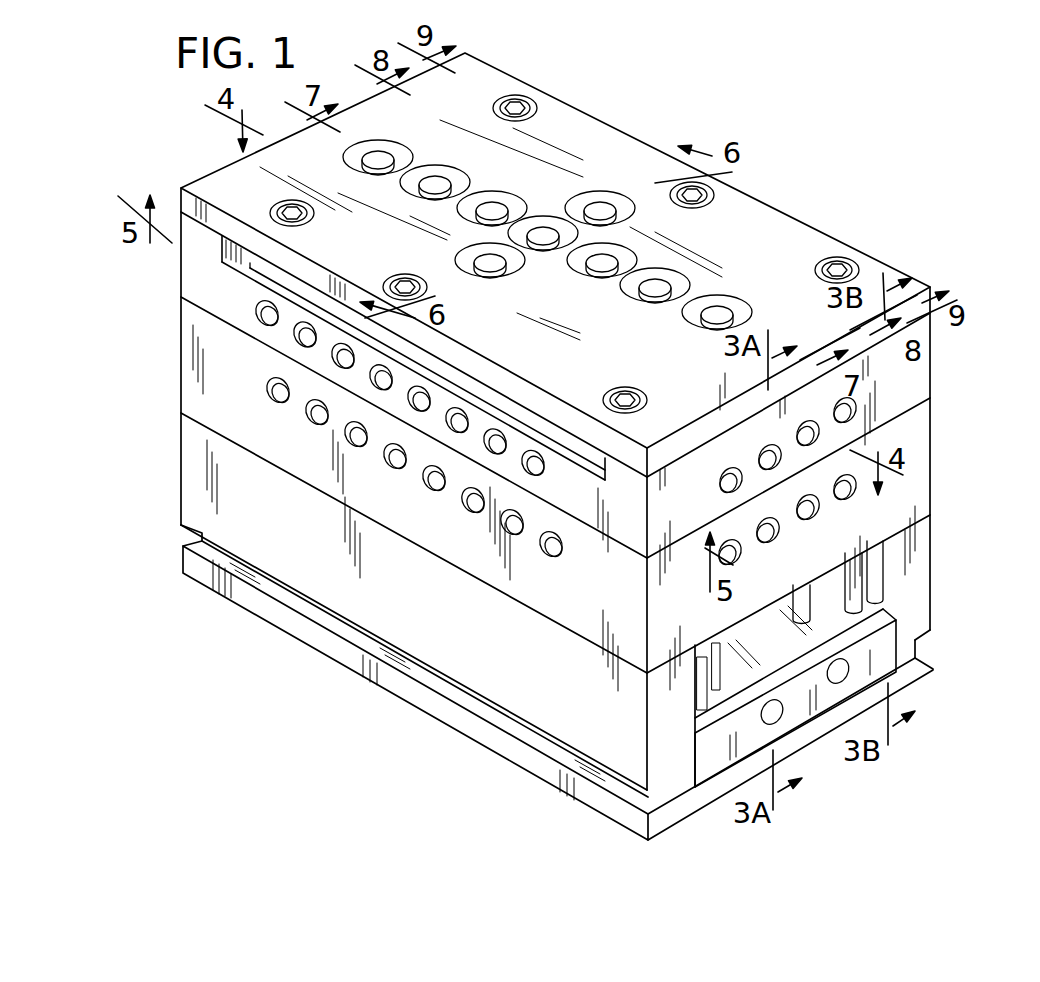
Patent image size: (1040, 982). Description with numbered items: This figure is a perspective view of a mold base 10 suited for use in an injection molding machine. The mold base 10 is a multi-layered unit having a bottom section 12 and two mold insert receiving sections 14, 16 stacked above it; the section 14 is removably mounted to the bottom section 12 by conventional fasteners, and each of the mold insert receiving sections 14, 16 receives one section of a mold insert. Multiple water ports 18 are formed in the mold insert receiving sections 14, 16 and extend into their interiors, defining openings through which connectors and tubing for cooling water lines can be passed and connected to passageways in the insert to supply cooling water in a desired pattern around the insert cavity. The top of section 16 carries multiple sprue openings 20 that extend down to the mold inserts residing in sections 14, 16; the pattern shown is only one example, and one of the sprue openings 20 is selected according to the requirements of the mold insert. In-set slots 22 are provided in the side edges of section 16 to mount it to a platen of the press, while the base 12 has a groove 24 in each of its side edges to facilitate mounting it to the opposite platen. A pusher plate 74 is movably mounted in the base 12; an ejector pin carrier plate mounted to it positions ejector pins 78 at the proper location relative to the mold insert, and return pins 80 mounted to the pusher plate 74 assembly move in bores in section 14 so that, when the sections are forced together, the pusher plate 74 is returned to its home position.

The mold base 10 is at (848, 199).
The bottom section 12 is at (932, 560).
The mold insert receiving section 14 is at (932, 440).
The mold insert receiving section 16 is at (932, 358).
The water ports 18 is at (305, 342).
The sprue openings 20 is at (655, 290).
The in-set slots 22 is at (248, 263).
The groove 24 is at (930, 640).
The pusher plate 74 is at (880, 650).
The ejector pins 78 is at (795, 607).
The return pins 80 is at (865, 572).